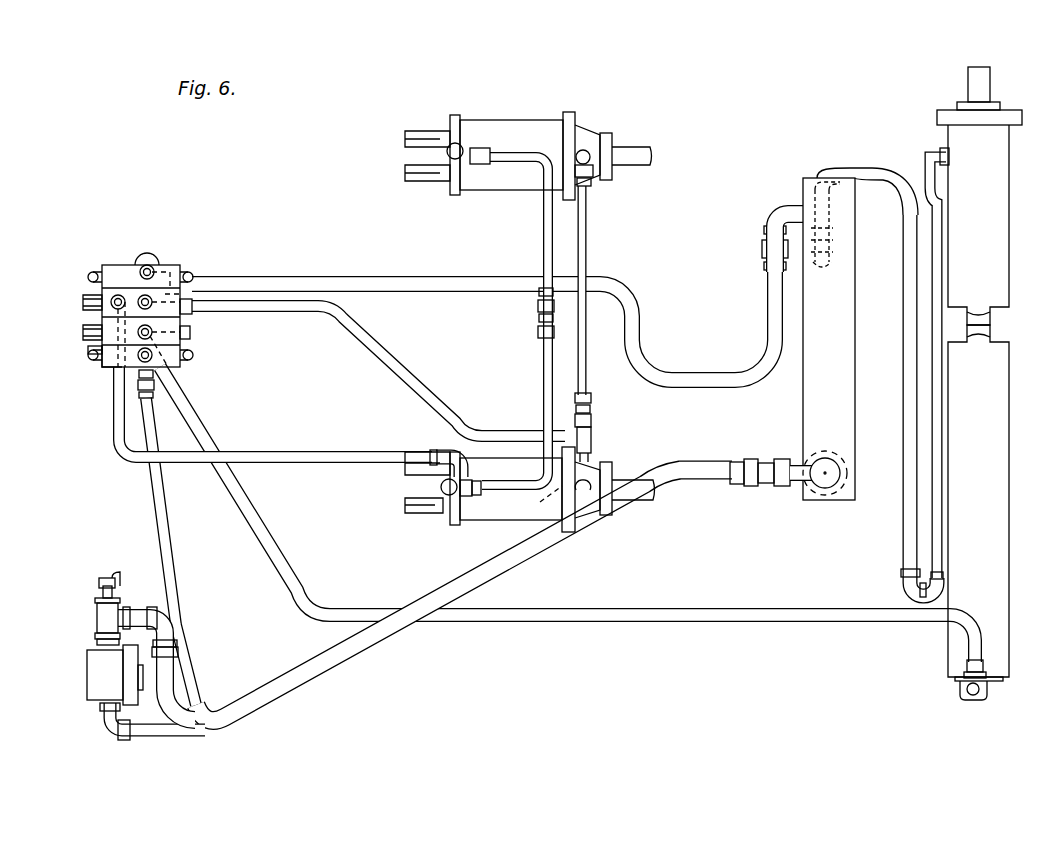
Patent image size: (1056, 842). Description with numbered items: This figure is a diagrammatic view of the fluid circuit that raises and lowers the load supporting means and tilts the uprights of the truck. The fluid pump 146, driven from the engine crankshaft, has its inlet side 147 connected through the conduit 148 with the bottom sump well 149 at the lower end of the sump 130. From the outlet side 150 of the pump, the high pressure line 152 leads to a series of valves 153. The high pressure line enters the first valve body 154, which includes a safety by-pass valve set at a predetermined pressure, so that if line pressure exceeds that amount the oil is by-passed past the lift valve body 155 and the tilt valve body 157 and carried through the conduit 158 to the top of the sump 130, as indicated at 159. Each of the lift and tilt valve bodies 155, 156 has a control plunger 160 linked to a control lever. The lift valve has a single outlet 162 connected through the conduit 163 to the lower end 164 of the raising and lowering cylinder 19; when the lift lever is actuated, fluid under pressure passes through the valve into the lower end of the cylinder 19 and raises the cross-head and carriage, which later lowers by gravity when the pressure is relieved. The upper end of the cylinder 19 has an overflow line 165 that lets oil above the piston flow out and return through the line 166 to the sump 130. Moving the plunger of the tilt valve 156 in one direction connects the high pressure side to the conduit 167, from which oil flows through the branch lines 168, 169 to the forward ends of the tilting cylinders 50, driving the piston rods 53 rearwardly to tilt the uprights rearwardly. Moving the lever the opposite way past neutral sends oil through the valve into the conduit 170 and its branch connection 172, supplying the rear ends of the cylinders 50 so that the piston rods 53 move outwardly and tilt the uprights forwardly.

The raising and lowering cylinder 19 is at (1000, 218).
The tilting cylinders 50 is at (503, 118).
The piston rods 53 is at (635, 150).
The sump 130 is at (845, 262).
The fluid pump 146 is at (95, 678).
The inlet side of the pump 147 is at (97, 640).
The conduit 148 is at (318, 660).
The bottom sump well 149 is at (900, 461).
The outlet side of the pump 150 is at (105, 703).
The high pressure line 152 is at (178, 590).
The series of valves 153 is at (92, 350).
The first valve body 154 is at (106, 362).
The lift valve body 155 is at (90, 332).
The tilt valve body 156 is at (90, 302).
The tilt valve body 157 is at (113, 272).
The conduit 158 is at (313, 277).
The top connection of sump 159 is at (800, 203).
The control plunger 160 is at (192, 307).
The single outlet of lift valve 162 is at (186, 343).
The conduit 163 is at (200, 419).
The lower end of lift cylinder 164 is at (965, 694).
The overflow line 165 is at (930, 152).
The return line 166 is at (907, 342).
The conduit 167 is at (298, 306).
The branch line 168 is at (590, 455).
The branch line 169 is at (587, 233).
The conduit 170 is at (313, 455).
The branch connection 172 is at (542, 361).